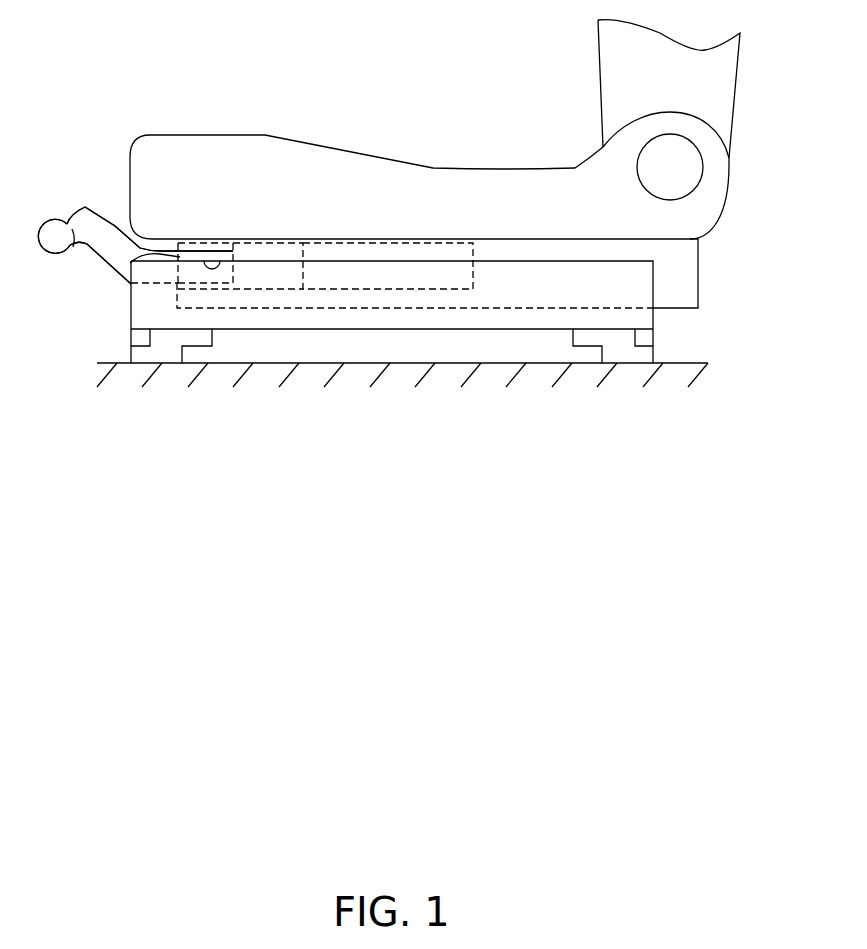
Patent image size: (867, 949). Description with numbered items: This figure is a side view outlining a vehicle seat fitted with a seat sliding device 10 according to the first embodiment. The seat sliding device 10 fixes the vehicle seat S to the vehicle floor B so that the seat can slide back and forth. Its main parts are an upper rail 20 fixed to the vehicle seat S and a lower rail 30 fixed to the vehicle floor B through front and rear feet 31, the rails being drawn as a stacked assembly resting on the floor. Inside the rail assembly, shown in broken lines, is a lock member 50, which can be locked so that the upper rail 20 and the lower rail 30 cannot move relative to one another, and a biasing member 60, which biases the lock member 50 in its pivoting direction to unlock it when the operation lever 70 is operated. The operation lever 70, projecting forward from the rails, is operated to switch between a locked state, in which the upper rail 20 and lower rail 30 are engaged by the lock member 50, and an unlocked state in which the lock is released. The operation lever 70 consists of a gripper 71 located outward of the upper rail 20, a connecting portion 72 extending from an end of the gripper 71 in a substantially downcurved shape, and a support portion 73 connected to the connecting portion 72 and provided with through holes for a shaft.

The seat sliding device 10 is at (710, 267).
The upper rail 20 is at (683, 308).
The lower rail 30 is at (517, 330).
The foot 31 is at (190, 364).
The lock member 50 is at (420, 242).
The biasing member 60 is at (258, 240).
The operation lever 70 is at (90, 165).
The gripper 71 is at (65, 220).
The connecting portion 72 is at (120, 236).
The support portion 73 is at (131, 283).
The vehicle seat S is at (205, 134).
The vehicle floor B is at (101, 362).